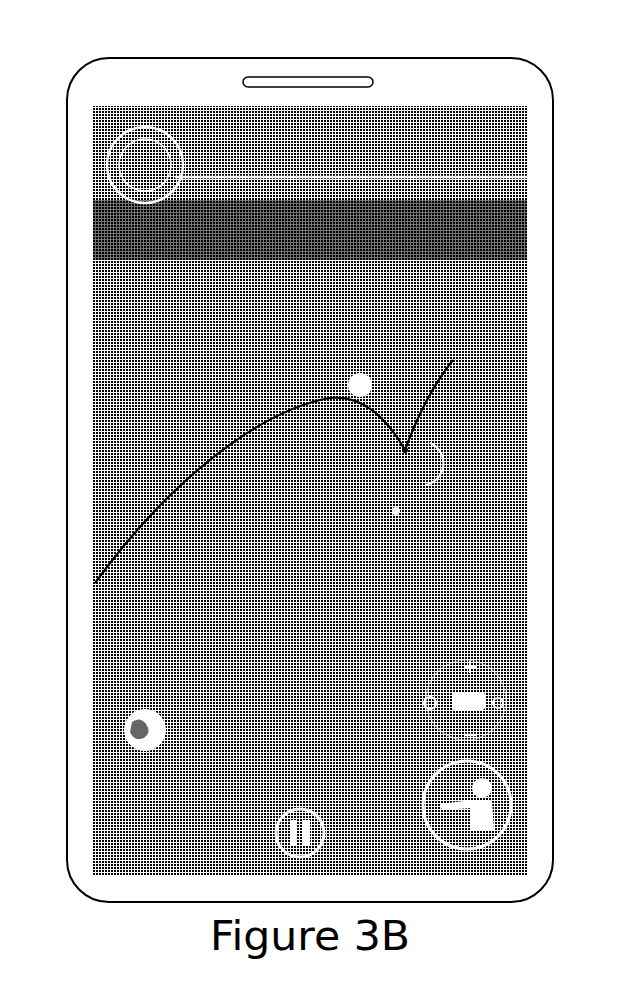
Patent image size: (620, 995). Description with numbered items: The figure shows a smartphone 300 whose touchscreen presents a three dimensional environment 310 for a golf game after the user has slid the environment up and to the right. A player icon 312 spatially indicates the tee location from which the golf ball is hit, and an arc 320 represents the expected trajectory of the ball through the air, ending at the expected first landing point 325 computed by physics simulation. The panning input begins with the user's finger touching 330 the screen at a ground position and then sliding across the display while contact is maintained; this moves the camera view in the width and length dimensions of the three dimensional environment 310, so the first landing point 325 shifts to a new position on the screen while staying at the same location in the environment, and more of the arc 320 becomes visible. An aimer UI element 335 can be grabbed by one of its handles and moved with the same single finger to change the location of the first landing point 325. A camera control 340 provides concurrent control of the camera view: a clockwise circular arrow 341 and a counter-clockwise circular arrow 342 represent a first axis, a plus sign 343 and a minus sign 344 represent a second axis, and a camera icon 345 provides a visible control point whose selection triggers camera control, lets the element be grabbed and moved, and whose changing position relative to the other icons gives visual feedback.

The smartphone 300 is at (80, 72).
The 3D environment 310 is at (190, 242).
The player icon 312 is at (120, 733).
The arc 320 is at (168, 488).
The first landing point 325 is at (417, 452).
The finger touching 330 is at (400, 512).
The aimer UI element 335 is at (452, 468).
The camera control 340 is at (510, 680).
The clockwise circular arrow 341 is at (517, 700).
The counter-clockwise circular arrow 342 is at (445, 697).
The plus sign 343 is at (480, 667).
The minus sign 344 is at (480, 738).
The camera icon 345 is at (483, 715).